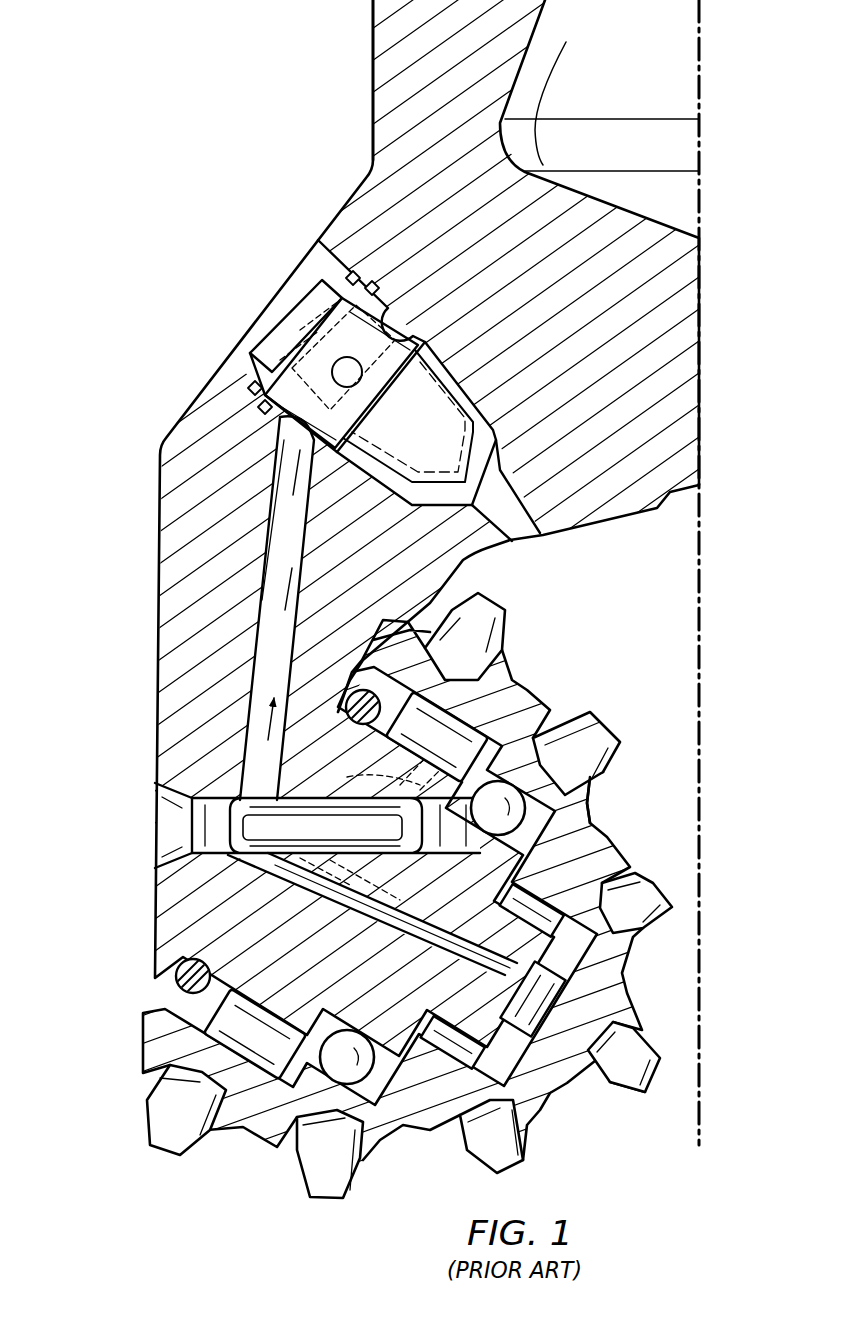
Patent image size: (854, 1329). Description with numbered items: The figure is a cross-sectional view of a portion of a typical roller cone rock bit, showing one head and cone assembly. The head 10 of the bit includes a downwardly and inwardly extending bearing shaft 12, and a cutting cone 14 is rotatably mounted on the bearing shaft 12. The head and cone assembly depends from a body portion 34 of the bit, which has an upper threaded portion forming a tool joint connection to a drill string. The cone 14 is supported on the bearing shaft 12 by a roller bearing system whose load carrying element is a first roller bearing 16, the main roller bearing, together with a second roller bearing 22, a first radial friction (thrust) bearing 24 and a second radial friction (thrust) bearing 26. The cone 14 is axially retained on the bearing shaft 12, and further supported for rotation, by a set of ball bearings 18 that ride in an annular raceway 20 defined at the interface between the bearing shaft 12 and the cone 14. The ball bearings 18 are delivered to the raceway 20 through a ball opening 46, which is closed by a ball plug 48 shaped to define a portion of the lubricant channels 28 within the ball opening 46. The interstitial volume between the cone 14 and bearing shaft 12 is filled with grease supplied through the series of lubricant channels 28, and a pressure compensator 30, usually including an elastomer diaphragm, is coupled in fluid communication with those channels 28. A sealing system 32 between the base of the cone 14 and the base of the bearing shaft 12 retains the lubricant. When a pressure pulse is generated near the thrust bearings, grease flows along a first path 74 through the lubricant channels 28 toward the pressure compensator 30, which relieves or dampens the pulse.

The head 10 is at (114, 196).
The bearing shaft 12 is at (338, 952).
The cutting cone 14 is at (640, 958).
The first roller bearing 16 is at (265, 1120).
The ball bearings 18 is at (347, 1030).
The annular raceway 20 is at (522, 770).
The second roller bearing 22 is at (433, 1085).
The first radial friction (thrust) bearing 24 is at (572, 870).
The second radial friction (thrust) bearing 26 is at (547, 1000).
The lubricant channels 28 is at (275, 527).
The pressure compensator 30 is at (307, 283).
The sealing system 32 is at (178, 1002).
The body portion 34 is at (382, 58).
The ball opening 46 is at (250, 858).
The ball plug 48 is at (207, 826).
The first path 74 is at (278, 602).